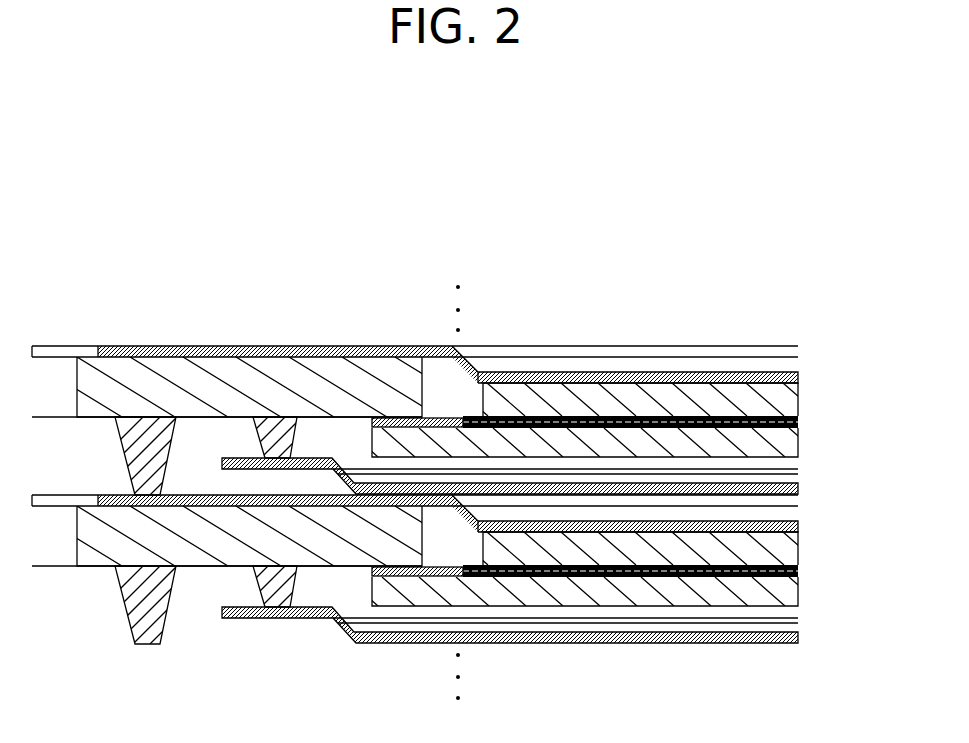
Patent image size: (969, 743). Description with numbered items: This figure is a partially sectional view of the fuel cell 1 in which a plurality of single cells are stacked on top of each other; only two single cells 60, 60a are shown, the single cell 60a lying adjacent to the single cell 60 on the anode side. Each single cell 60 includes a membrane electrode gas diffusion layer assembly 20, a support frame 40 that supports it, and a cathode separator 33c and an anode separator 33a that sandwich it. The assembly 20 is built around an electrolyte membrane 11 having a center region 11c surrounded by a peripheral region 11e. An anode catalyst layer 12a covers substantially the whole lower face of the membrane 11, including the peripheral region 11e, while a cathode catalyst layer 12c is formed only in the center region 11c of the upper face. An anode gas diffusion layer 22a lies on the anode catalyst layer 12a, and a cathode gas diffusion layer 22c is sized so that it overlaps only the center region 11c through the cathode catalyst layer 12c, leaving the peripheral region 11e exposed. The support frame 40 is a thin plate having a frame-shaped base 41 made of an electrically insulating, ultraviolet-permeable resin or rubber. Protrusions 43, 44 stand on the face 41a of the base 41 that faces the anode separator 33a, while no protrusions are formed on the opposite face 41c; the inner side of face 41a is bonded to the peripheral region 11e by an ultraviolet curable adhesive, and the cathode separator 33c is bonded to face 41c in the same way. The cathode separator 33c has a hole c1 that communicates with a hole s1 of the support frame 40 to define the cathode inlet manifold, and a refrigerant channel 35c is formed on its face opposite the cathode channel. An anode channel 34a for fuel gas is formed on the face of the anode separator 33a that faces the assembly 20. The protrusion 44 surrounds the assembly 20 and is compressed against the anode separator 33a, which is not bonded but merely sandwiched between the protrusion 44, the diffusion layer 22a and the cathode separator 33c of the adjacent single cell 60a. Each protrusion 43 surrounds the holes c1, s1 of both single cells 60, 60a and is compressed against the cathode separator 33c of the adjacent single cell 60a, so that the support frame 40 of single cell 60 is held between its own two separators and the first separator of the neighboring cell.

The fuel cell 1 is at (784, 285).
The single cell 60 is at (806, 329).
The single cell 60a is at (824, 639).
The membrane electrode gas diffusion layer assembly 20 is at (630, 494).
The electrolyte membrane 11 is at (800, 422).
The center region 11c is at (530, 418).
The peripheral region 11e is at (410, 418).
The cathode catalyst layer 12c is at (800, 417).
The anode catalyst layer 12a is at (800, 427).
The cathode gas diffusion layer 22c is at (790, 394).
The anode gas diffusion layer 22a is at (792, 453).
The cathode separator 33c is at (795, 348).
The anode separator 33a is at (793, 490).
The anode channel 34a is at (787, 473).
The refrigerant channel 35c is at (566, 372).
The support frame 40 is at (77, 431).
The base 41 is at (100, 410).
The face 41a is at (236, 419).
The face 41c is at (173, 346).
The protrusion 43 is at (167, 440).
The protrusion 44 is at (298, 441).
The hole c1 is at (50, 346).
The hole s1 is at (42, 409).